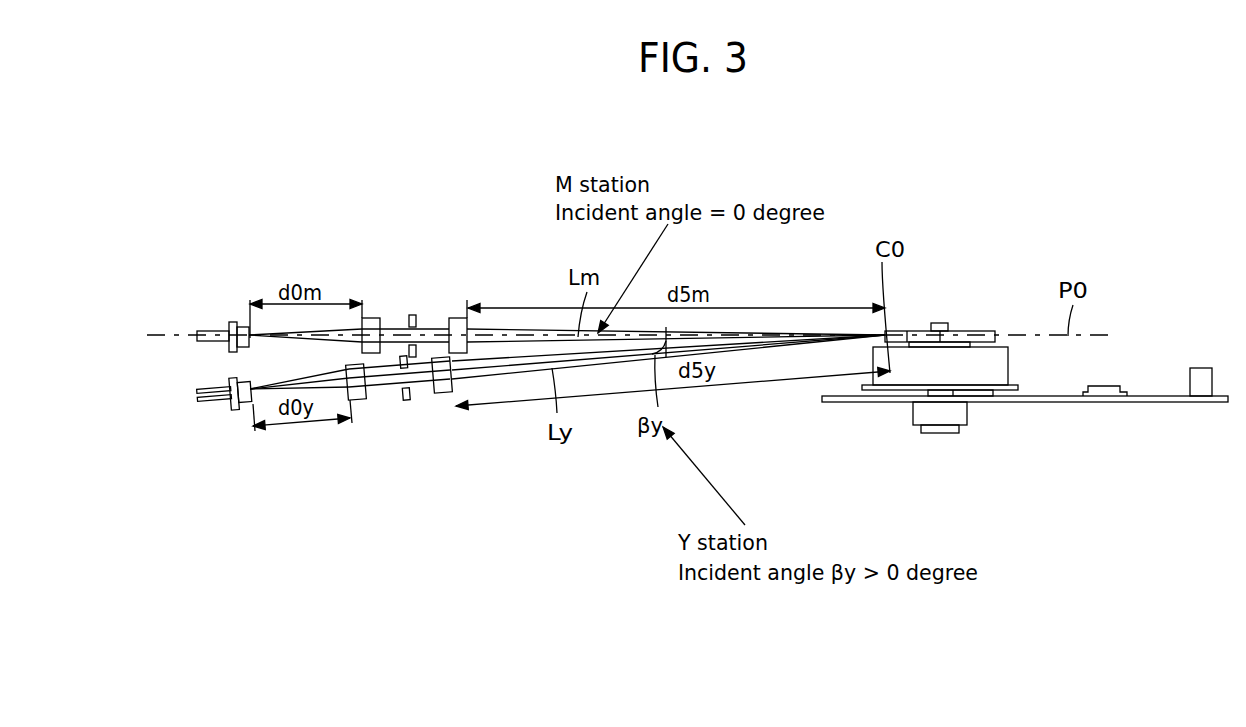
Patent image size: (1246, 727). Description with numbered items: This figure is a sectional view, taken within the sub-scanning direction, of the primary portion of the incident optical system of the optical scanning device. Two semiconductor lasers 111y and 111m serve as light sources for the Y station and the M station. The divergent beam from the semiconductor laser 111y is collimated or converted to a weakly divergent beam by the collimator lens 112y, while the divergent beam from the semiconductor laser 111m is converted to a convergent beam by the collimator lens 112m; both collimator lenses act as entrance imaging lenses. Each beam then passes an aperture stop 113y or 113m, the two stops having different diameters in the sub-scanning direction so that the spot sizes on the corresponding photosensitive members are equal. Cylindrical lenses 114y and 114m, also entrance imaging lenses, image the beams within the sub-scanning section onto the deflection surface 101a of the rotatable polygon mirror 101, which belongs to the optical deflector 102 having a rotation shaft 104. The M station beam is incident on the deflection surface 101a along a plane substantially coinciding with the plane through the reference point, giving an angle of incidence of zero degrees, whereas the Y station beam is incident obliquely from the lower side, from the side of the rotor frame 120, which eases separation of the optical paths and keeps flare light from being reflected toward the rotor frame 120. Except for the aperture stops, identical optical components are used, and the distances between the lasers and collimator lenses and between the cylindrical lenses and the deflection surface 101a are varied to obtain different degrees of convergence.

The semiconductor laser 111m is at (233, 320).
The semiconductor laser 111y is at (235, 412).
The collimator lens 112m is at (370, 317).
The collimator lens 112y is at (355, 399).
The aperture stop 113m is at (413, 314).
The aperture stop 113y is at (405, 402).
The cylindrical lens 114m is at (457, 317).
The cylindrical lens 114y is at (443, 394).
The rotatable polygon mirror 101 is at (983, 331).
The deflection surface 101a is at (908, 331).
The rotation shaft 104 is at (945, 322).
The rotor frame 120 is at (988, 377).
The optical deflector 102 is at (938, 410).